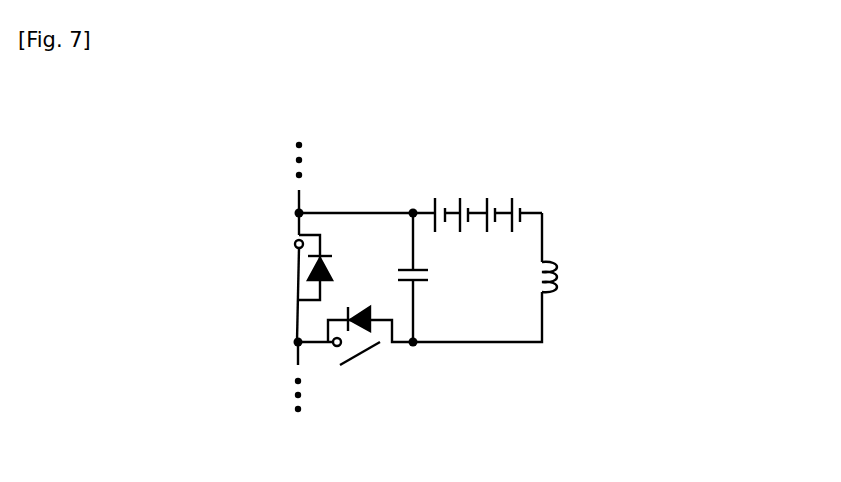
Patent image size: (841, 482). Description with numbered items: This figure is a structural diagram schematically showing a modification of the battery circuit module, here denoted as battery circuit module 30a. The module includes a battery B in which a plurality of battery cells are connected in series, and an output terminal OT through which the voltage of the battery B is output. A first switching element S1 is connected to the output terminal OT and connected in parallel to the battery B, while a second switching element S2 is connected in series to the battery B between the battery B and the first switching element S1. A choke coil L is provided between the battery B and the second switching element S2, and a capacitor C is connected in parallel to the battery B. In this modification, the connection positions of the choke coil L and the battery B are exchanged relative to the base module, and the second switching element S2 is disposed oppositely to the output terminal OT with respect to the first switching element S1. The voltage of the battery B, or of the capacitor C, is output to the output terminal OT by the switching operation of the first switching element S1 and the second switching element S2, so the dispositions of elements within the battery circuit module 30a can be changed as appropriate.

The output terminal OT is at (303, 209).
The first switching element S1 is at (283, 268).
The second switching element S2 is at (365, 365).
The capacitor C is at (420, 289).
The battery B is at (476, 190).
The choke coil L is at (570, 276).
The battery circuit module 30a is at (578, 187).